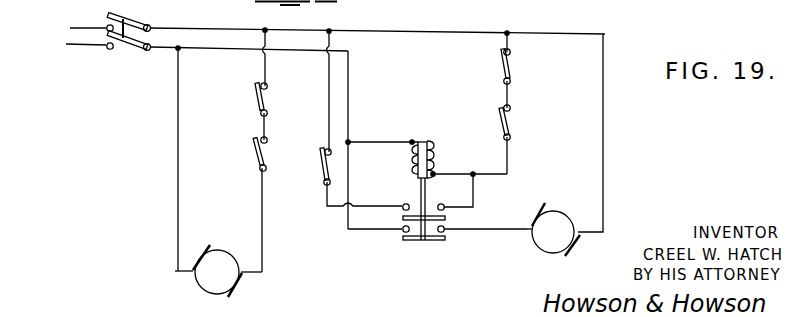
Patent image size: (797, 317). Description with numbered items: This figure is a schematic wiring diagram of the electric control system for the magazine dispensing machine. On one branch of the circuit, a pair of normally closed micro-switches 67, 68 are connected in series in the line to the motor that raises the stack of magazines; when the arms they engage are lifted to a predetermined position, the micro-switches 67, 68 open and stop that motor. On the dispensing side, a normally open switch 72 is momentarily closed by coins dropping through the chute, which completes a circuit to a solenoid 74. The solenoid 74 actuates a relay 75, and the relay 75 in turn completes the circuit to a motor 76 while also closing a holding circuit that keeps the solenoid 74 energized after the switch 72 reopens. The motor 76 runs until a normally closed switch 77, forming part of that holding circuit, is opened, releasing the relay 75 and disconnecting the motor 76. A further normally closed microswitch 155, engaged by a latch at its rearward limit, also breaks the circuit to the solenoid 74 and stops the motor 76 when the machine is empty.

The micro-switch 67 is at (255, 158).
The micro-switch 68 is at (257, 106).
The switch 72 is at (498, 117).
The solenoid 74 is at (432, 157).
The relay 75 is at (425, 243).
The motor 76 is at (543, 255).
The switch 77 is at (323, 168).
The microswitch 155 is at (502, 70).